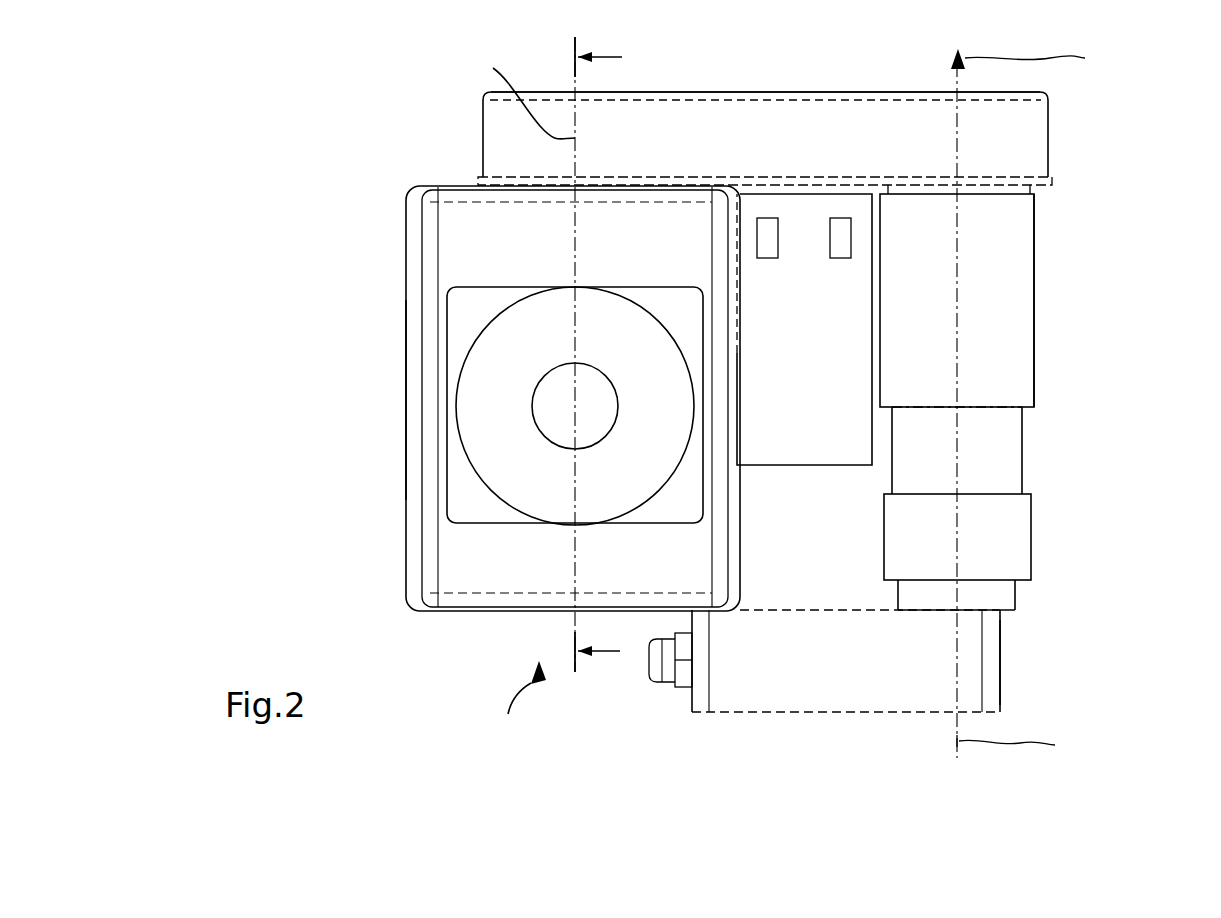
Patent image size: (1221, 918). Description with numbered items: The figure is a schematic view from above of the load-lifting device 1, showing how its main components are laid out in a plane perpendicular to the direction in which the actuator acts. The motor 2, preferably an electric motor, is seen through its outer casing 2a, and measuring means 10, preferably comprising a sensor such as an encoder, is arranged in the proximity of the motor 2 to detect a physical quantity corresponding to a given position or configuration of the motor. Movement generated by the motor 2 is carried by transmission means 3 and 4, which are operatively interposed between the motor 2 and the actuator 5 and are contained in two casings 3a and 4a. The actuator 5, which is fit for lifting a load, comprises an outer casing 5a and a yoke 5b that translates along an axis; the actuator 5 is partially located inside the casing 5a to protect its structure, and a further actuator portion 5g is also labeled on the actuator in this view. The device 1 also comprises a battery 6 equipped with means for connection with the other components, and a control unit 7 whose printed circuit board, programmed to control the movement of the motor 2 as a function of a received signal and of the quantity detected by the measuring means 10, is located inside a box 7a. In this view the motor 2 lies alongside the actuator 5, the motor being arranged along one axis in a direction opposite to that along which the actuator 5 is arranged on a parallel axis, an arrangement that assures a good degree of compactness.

The device 1 is at (290, 140).
The motor 2 is at (1044, 432).
The outer casing 2a is at (1022, 467).
The transmission means 3 is at (1055, 232).
The casing 3a is at (1034, 345).
The transmission means 4 is at (1066, 122).
The casing 4a is at (800, 91).
The actuator 5 is at (386, 255).
The outer casing 5a is at (405, 580).
The yoke 5b is at (547, 490).
The recess 5g is at (464, 492).
The battery 6 is at (814, 307).
The control unit 7 is at (1018, 679).
The box 7a is at (1000, 636).
The measuring means 10 is at (1021, 593).